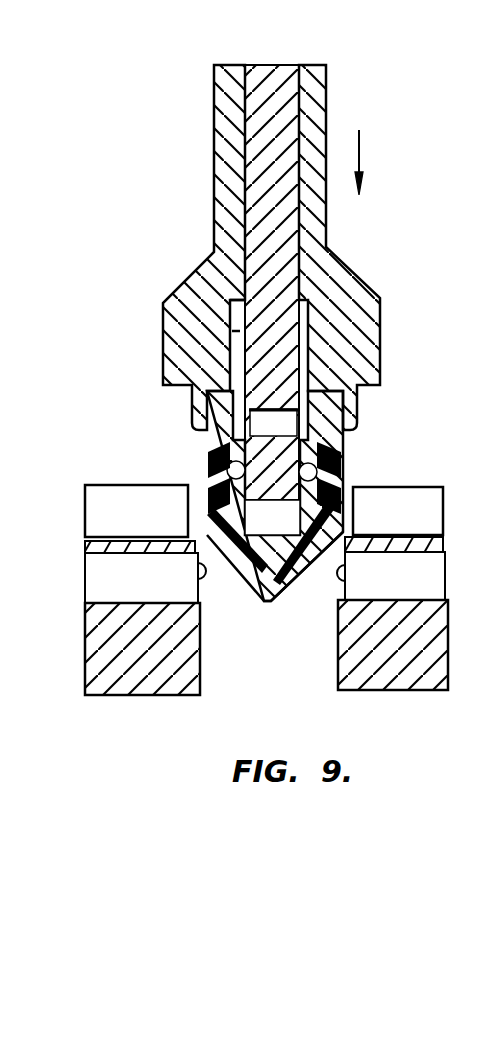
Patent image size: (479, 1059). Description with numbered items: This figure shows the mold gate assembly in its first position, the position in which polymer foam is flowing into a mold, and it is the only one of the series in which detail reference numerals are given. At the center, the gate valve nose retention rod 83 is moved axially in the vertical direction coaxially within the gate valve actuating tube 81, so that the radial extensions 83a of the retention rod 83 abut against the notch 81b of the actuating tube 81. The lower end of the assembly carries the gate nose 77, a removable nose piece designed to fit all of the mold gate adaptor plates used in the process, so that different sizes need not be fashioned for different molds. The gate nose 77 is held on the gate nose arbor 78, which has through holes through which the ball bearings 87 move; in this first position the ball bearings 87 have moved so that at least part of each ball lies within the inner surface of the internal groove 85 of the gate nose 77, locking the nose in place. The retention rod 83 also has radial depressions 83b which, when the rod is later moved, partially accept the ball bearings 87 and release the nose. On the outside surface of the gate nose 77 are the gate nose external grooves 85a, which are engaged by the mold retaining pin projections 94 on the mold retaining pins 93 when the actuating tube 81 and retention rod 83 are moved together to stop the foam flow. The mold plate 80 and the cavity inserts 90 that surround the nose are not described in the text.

The gate nose 77 is at (277, 588).
The gate nose arbor 78 is at (283, 504).
The mold plate 80 is at (423, 503).
The gate valve actuating tube 81 is at (282, 247).
The notch 81b is at (313, 293).
The gate valve nose retention rod 83 is at (206, 282).
The radial extensions 83a is at (237, 333).
The radial depressions 83b is at (250, 410).
The internal groove 85 is at (358, 469).
The gate nose external grooves 85a is at (350, 510).
The ball bearings 87 is at (215, 468).
The cavity insert 90 is at (198, 490).
The mold retaining pins 93 is at (143, 584).
The mold retaining pin projections 94 is at (207, 578).